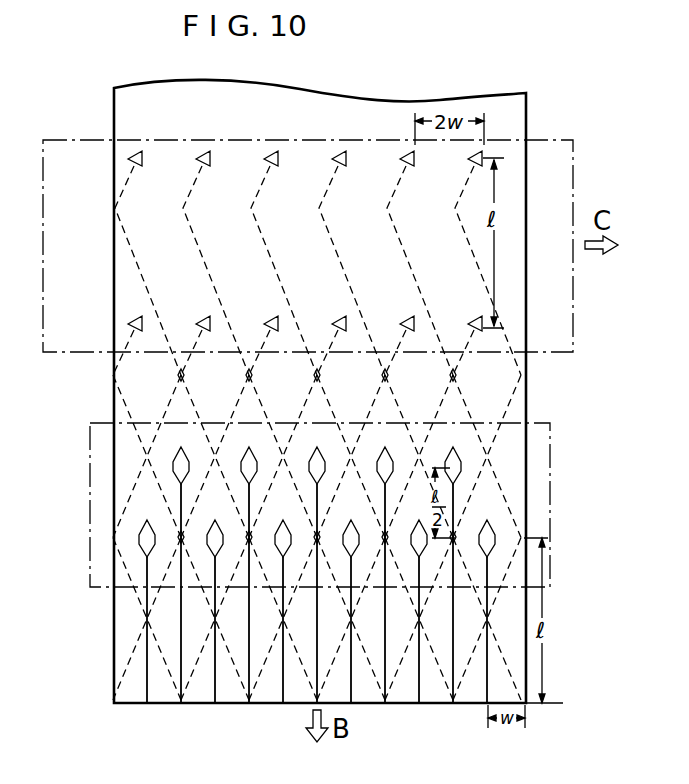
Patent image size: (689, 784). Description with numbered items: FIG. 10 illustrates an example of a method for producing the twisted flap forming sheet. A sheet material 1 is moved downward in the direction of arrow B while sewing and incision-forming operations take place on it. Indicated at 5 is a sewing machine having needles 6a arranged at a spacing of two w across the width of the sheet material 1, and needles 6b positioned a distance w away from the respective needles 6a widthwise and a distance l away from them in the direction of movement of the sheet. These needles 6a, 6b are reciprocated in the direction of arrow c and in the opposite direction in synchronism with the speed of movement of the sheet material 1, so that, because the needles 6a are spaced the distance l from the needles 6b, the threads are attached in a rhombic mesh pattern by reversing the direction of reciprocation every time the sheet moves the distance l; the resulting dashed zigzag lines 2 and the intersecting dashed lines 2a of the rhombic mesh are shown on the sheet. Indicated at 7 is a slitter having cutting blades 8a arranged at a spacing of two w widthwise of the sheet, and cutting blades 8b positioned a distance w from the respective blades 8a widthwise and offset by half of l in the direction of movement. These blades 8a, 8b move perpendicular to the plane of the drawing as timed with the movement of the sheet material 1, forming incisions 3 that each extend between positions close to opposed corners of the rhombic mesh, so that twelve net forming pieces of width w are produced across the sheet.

The sheet material 1 is at (527, 105).
The zigzag pattern of dashed lines 2 is at (512, 310).
The intersecting dashed lattice lines 2a is at (456, 376).
The solid straight lines 3 is at (490, 570).
The sewing machine 5 is at (575, 164).
The needles 6a is at (476, 159).
The needles 6b is at (478, 318).
The slitter 7 is at (552, 435).
The cutting blades 8a is at (456, 449).
The cutting blades 8b is at (492, 525).